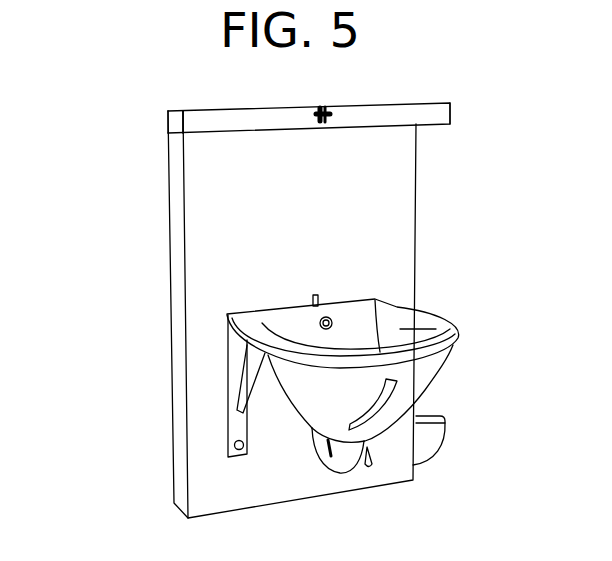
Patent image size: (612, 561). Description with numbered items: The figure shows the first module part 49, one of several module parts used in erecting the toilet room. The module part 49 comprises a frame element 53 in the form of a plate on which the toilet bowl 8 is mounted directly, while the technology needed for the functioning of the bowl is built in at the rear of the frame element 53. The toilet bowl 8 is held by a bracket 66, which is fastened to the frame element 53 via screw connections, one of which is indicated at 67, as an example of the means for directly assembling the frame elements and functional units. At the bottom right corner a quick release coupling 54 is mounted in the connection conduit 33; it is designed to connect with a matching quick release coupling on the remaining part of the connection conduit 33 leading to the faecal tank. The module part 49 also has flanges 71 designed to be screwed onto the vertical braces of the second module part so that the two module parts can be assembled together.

The first module part 49 is at (247, 98).
The frame element 53 is at (377, 115).
The flanges 71 is at (192, 122).
The toilet bowl 8 is at (443, 322).
The bracket 66 is at (237, 361).
The bracket bolt 67 is at (228, 448).
The quick release coupling 54 is at (443, 417).
The connection conduit 33 is at (428, 437).